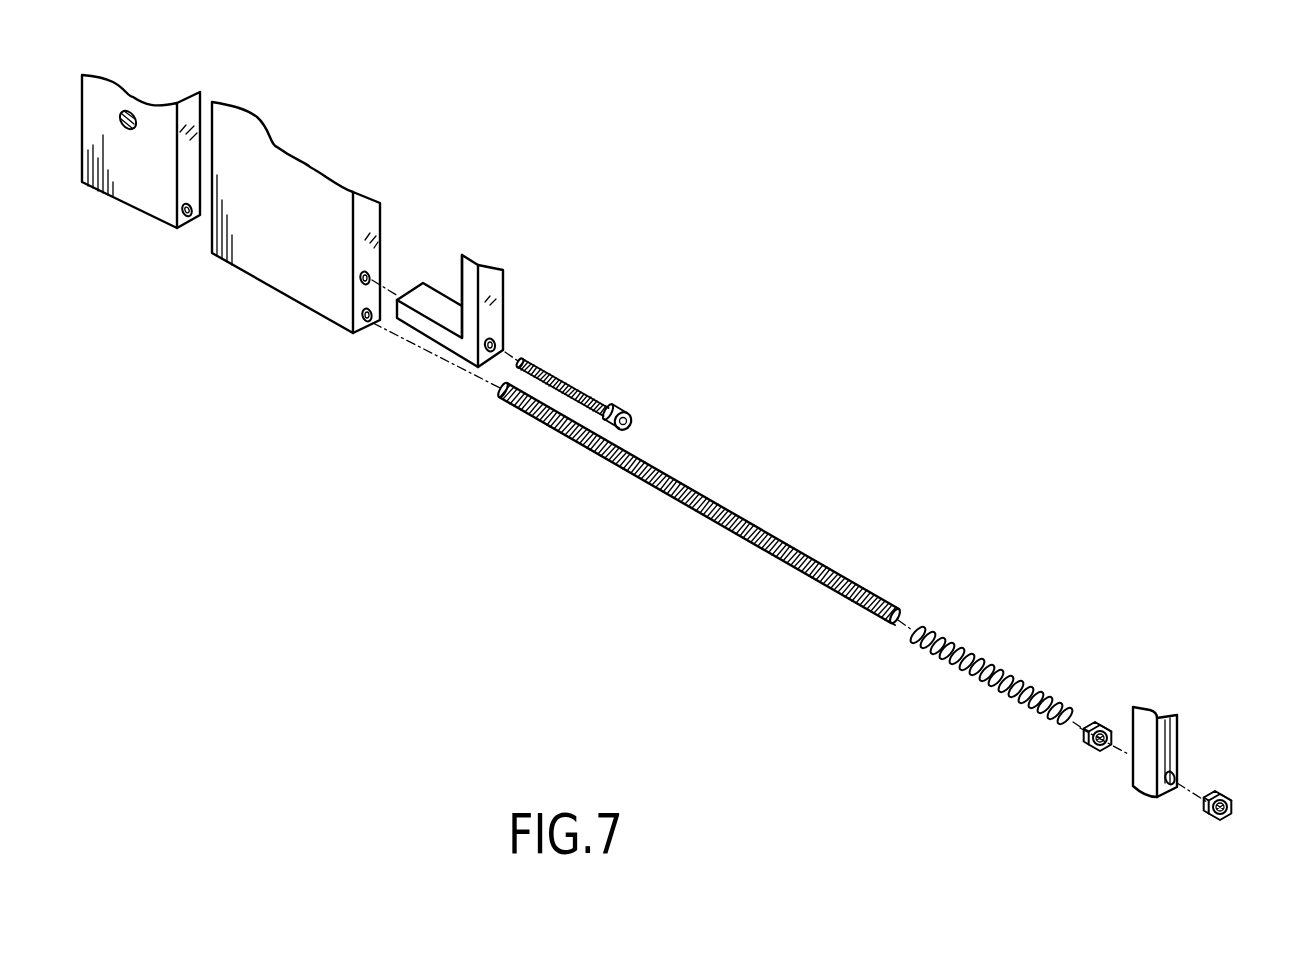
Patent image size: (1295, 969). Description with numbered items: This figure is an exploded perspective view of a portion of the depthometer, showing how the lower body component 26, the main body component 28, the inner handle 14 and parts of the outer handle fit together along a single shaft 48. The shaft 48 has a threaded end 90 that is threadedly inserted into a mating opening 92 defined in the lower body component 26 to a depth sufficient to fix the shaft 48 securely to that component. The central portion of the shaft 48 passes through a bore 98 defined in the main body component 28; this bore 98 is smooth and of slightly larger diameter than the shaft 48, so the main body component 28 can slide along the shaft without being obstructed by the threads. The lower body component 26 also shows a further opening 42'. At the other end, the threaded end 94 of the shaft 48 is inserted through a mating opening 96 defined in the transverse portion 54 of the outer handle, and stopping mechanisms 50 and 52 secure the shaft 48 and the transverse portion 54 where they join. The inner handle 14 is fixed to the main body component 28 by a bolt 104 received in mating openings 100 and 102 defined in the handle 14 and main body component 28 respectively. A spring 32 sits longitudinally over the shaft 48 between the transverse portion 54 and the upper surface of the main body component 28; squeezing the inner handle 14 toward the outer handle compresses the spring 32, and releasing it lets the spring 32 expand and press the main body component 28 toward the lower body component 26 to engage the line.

The inner handle 14 is at (497, 280).
The lower body component 26 is at (160, 223).
The main body component 28 is at (288, 298).
The spring 32 is at (960, 637).
The hole in first block 42' is at (129, 185).
The shaft 48 is at (883, 600).
The stopping mechanism 50 is at (1223, 790).
The stopping mechanism 52 is at (1103, 723).
The transverse portion 54 is at (1180, 730).
The threaded end 90 is at (500, 393).
The mating opening 92 is at (187, 217).
The threaded end 94 is at (895, 623).
The mating opening 96 is at (1173, 790).
The bore 98 is at (365, 320).
The mating opening 100 is at (500, 345).
The mating opening 102 is at (370, 272).
The bolt 104 is at (593, 402).